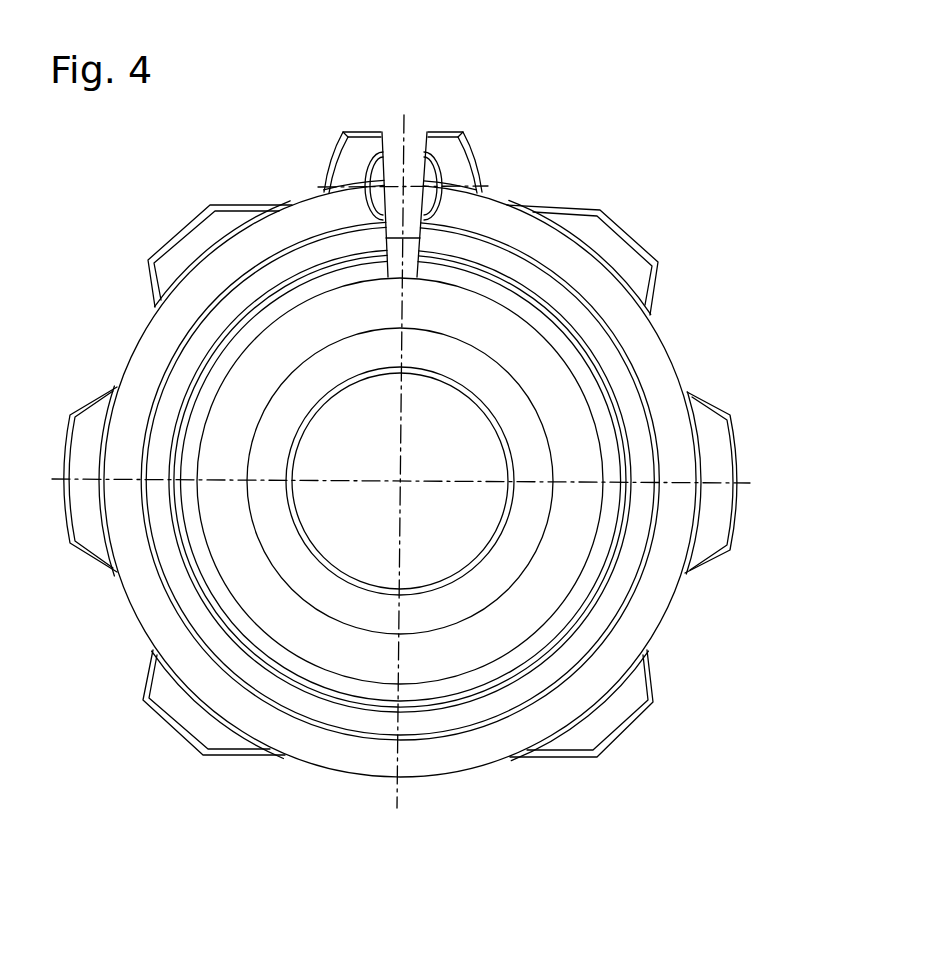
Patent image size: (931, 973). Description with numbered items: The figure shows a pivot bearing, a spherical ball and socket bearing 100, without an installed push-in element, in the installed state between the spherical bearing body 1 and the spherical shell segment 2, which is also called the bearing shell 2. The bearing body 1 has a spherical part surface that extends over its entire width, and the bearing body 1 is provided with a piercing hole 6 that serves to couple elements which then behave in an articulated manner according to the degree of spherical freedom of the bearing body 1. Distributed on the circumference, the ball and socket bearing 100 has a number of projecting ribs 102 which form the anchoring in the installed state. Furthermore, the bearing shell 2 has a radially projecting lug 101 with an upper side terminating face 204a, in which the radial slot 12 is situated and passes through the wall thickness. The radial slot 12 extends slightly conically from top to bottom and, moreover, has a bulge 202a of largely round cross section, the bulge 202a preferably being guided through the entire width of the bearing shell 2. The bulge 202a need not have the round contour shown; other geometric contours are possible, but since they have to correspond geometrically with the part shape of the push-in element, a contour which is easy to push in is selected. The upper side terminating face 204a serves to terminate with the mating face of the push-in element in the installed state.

The spherical ball and socket bearing 100 is at (662, 250).
The projecting ribs 102 is at (715, 438).
The upper side terminating face 204a is at (362, 132).
The radially projecting lug 101 is at (478, 153).
The bulge 202a is at (367, 182).
The radial slot 12 is at (408, 143).
The spherical shell segment 2 is at (615, 365).
The spherical bearing body 1 is at (557, 585).
The piercing hole 6 is at (426, 469).